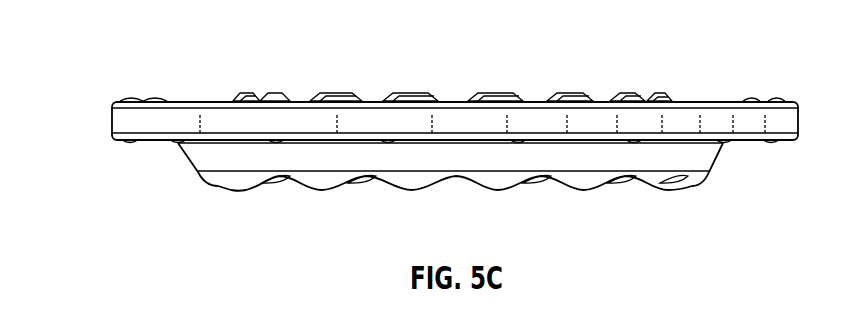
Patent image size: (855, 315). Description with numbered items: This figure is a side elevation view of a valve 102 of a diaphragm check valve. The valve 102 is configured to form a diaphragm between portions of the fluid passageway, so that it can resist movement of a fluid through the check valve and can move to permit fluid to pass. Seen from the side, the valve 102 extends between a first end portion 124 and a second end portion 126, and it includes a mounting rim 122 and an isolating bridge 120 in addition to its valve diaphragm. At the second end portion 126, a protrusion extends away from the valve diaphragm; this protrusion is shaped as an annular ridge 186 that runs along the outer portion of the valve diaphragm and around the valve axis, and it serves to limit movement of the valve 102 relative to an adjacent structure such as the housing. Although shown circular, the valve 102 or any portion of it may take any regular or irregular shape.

The valve 102 is at (421, 125).
The isolating bridge 120 is at (420, 196).
The mounting rim 122 is at (128, 122).
The first end portion 124 is at (622, 212).
The second end portion 126 is at (452, 60).
The annular ridge 186 is at (660, 100).